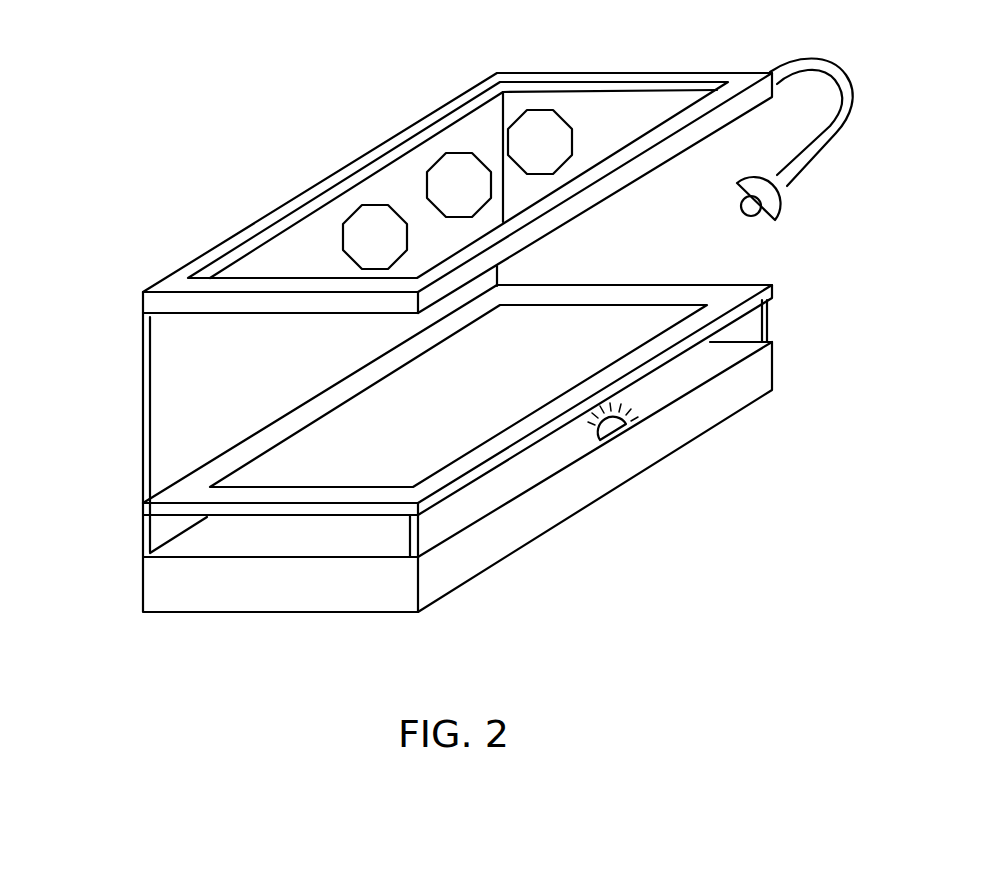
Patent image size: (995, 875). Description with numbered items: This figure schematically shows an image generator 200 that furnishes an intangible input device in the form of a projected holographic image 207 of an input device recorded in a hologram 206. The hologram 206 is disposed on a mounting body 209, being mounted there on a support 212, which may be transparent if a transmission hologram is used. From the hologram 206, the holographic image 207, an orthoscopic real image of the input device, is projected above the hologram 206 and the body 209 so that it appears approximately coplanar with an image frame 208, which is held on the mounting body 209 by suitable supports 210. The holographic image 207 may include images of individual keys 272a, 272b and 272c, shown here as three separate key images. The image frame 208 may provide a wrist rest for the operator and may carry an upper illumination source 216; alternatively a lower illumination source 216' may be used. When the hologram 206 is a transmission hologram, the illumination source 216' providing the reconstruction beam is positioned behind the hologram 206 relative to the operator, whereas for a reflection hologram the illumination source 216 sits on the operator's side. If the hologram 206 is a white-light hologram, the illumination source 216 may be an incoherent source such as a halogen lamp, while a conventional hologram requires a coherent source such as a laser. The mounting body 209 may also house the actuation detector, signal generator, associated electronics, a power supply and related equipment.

The image generator 200 is at (206, 67).
The hologram 206 is at (627, 332).
The holographic image 207 is at (277, 262).
The image frame 208 is at (157, 283).
The mounting body 209 is at (277, 595).
The supports 210 is at (143, 395).
The support 212 is at (175, 498).
The upper illumination source 216 is at (819, 140).
The lower illumination source 216' is at (687, 437).
The key image 272a is at (377, 223).
The key image 272b is at (442, 170).
The key image 272c is at (547, 115).